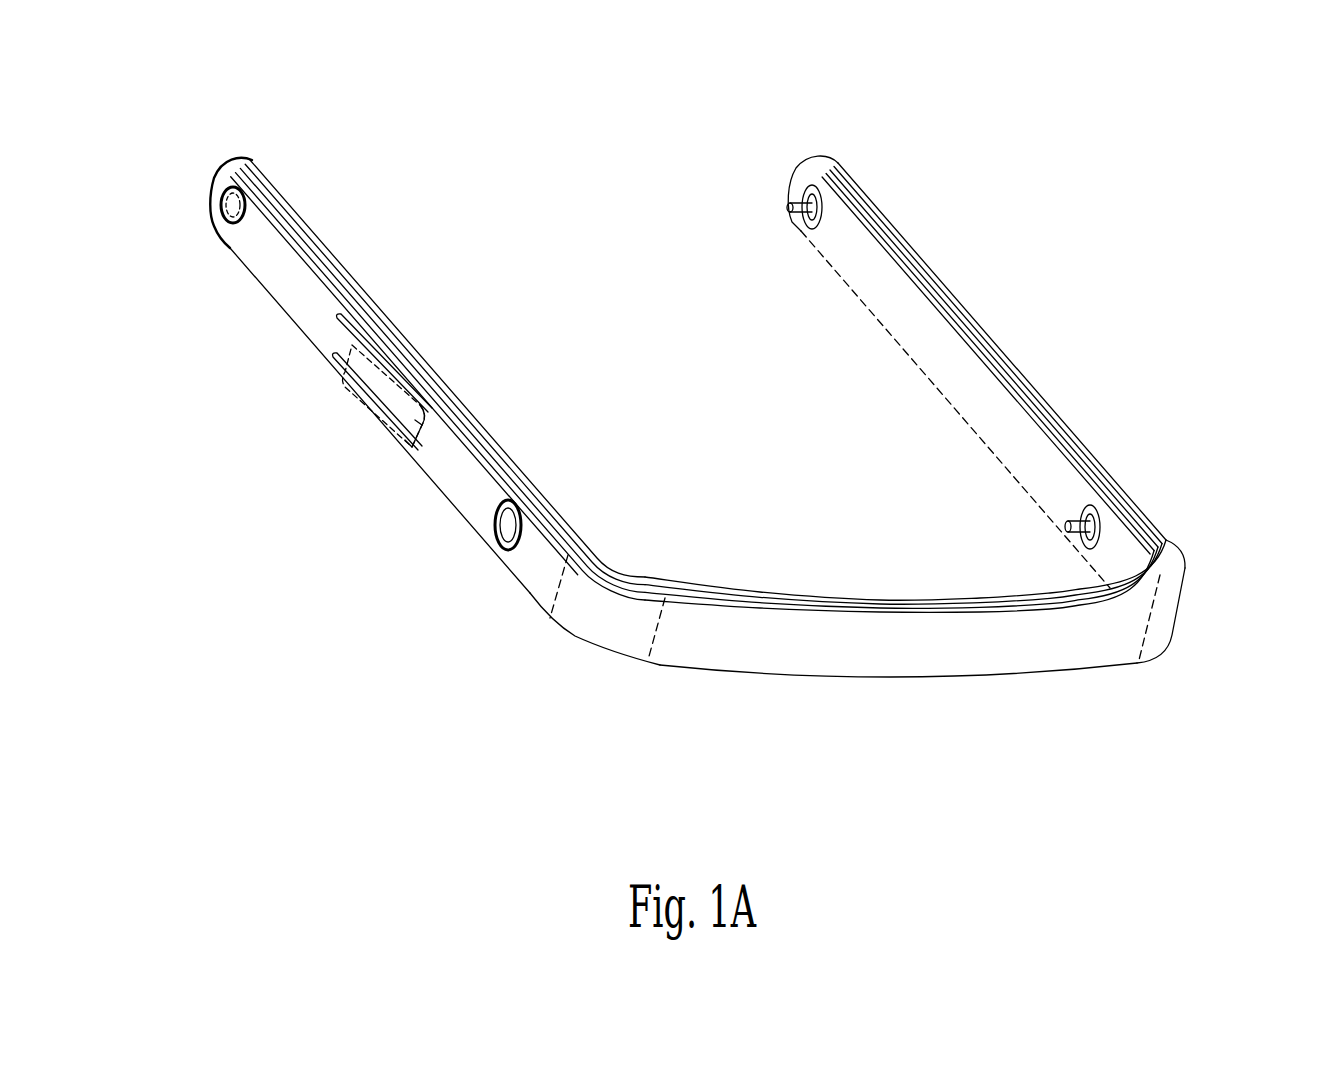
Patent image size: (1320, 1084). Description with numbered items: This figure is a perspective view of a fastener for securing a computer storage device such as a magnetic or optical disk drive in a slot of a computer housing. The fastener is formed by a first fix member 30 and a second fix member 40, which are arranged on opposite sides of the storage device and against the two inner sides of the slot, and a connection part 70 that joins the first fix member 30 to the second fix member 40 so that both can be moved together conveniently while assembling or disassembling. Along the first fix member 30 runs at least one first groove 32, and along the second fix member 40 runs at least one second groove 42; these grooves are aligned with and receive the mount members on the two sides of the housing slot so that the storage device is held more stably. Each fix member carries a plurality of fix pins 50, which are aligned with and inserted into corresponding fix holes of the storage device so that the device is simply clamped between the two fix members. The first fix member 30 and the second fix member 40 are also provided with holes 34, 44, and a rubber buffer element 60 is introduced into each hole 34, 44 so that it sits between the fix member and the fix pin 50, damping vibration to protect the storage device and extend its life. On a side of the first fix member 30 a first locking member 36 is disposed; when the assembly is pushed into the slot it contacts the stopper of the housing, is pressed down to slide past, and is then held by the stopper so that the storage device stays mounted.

The first fix member 30 is at (426, 437).
The first groove 32 is at (323, 242).
The hole 34 is at (227, 243).
The first locking member 36 is at (398, 410).
The second fix member 40 is at (999, 364).
The second groove 42 is at (940, 303).
The hole 44 is at (822, 203).
The fix pin 50 is at (243, 163).
The buffer element 60 is at (210, 213).
The connection part 70 is at (944, 728).